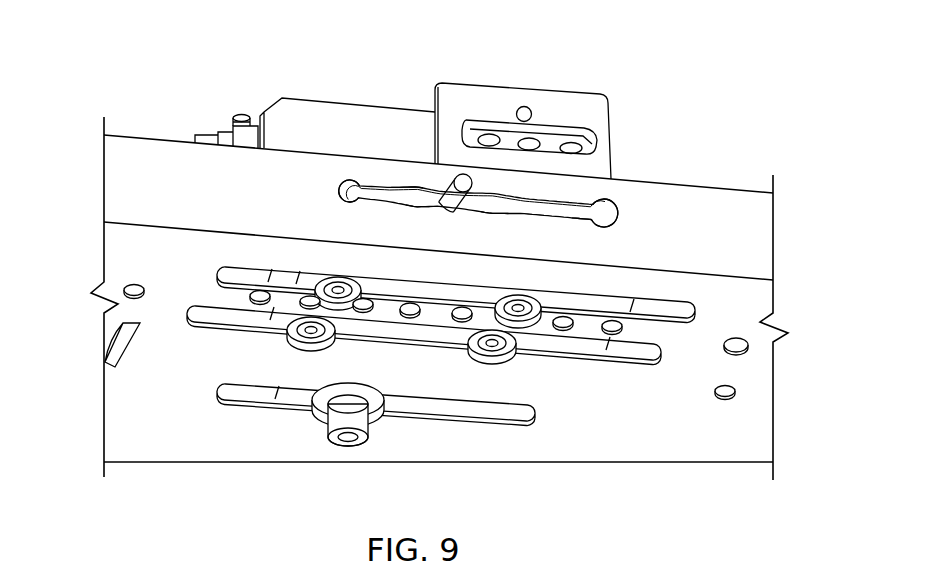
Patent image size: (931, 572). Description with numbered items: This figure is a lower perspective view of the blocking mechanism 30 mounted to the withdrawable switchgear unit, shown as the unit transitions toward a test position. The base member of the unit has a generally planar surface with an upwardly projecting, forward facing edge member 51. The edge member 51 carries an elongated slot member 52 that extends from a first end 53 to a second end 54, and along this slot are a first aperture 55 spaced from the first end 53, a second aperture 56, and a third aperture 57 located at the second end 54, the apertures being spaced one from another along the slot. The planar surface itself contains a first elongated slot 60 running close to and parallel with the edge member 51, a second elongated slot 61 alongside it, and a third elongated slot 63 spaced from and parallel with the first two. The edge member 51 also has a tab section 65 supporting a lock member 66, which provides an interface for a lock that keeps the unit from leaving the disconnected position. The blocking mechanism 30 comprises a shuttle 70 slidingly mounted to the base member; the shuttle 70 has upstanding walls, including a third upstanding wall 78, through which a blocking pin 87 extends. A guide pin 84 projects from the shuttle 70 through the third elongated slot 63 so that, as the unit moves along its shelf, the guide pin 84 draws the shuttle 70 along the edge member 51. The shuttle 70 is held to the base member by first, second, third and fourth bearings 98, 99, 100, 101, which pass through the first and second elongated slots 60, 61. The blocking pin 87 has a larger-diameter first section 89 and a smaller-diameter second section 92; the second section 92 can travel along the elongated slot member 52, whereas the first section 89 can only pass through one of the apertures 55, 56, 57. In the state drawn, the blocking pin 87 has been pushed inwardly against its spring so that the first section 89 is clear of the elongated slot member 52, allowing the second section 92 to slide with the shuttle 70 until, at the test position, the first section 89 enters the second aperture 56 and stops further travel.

The blocking mechanism 30 is at (421, 295).
The edge member 51 is at (147, 190).
The elongated slot member 52 is at (484, 157).
The first end 53 is at (340, 192).
The second end 54 is at (619, 213).
The first aperture 55 is at (420, 210).
The second aperture 56 is at (500, 213).
The third aperture 57 is at (615, 227).
The first elongated slot 60 is at (382, 284).
The second elongated slot 61 is at (215, 318).
The third elongated slot 63 is at (248, 403).
The tab section 65 is at (523, 101).
The lock member 66 is at (576, 121).
The shuttle 70 is at (315, 77).
The third upstanding wall 78 is at (296, 118).
The guide pin 84 is at (387, 443).
The blocking pin 87 is at (473, 158).
The first section 89 is at (408, 187).
The second section 92 is at (461, 174).
The first bearing 98 is at (337, 275).
The second bearing 99 is at (527, 319).
The third bearing 100 is at (313, 344).
The fourth bearing 101 is at (497, 358).